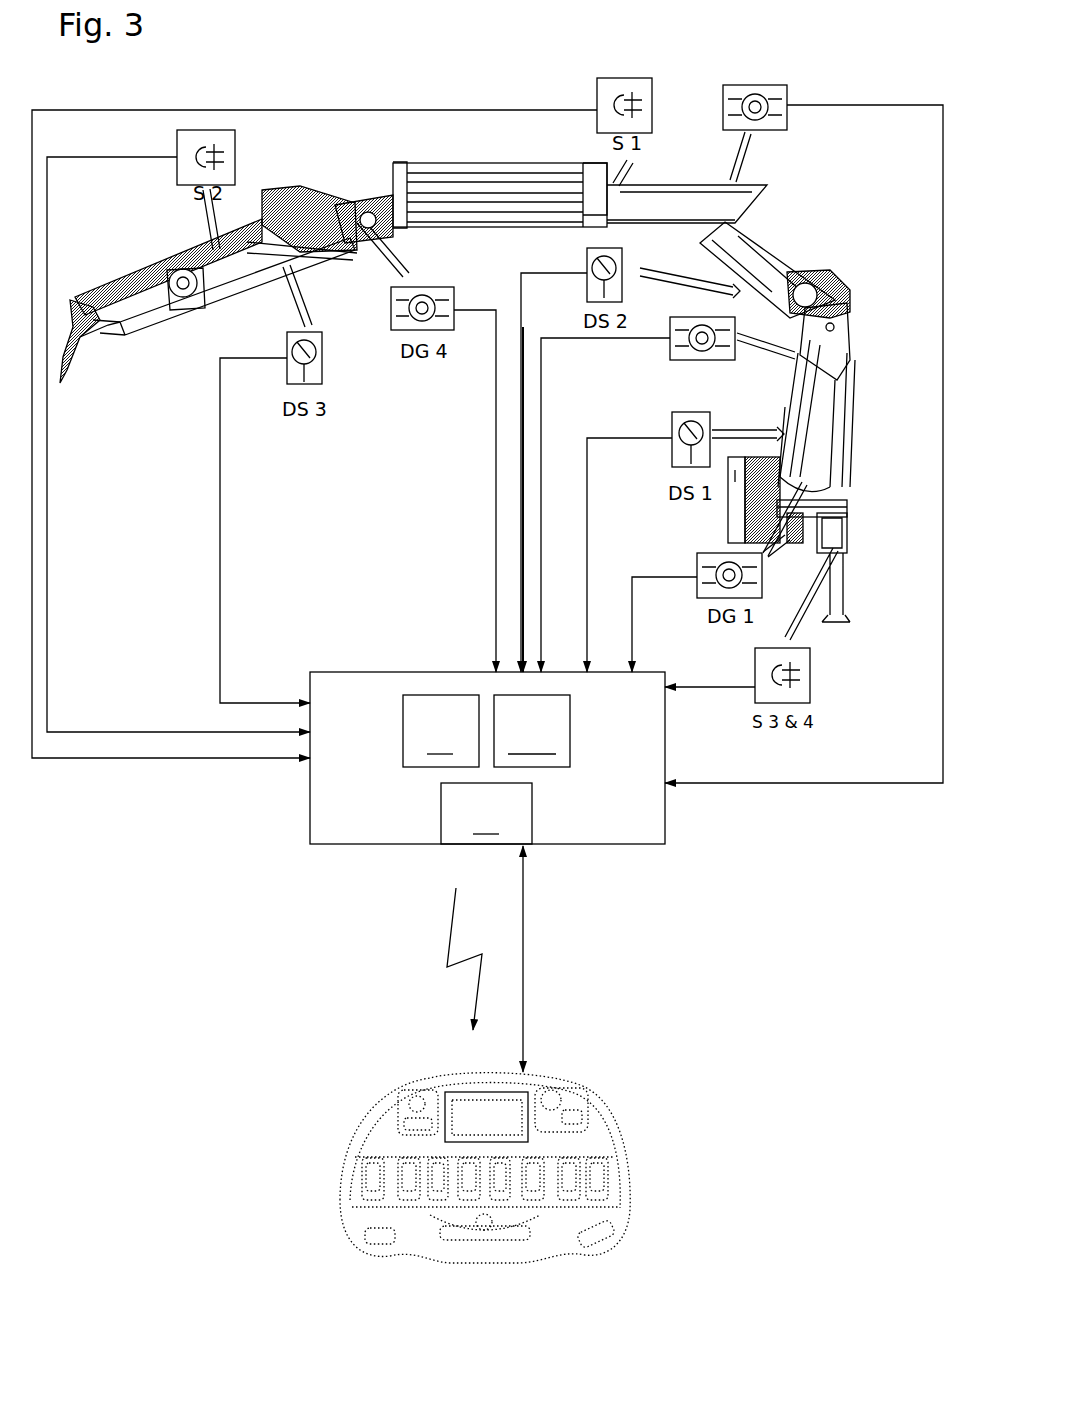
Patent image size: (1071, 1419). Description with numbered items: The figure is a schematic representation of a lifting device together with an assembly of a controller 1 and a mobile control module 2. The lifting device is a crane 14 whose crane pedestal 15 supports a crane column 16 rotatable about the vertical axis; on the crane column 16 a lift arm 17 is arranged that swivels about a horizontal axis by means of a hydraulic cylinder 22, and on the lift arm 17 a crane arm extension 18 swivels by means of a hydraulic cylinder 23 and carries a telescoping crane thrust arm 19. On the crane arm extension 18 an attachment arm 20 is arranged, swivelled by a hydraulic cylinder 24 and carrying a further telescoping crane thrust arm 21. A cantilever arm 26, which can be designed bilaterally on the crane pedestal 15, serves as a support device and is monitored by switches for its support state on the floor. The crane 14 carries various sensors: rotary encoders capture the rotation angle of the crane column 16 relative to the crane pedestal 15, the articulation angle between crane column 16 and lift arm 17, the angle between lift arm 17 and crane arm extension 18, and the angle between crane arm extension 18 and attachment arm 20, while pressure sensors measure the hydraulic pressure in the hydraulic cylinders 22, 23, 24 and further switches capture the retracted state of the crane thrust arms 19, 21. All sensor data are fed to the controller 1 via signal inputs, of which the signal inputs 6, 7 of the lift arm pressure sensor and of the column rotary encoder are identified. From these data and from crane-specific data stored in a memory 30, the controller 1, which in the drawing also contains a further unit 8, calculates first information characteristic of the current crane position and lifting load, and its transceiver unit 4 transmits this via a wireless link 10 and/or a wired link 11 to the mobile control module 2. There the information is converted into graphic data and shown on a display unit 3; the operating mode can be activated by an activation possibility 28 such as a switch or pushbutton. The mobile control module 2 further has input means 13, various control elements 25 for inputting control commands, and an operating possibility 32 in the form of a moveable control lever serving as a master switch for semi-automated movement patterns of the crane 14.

The controller 1 is at (406, 813).
The mobile control module 2 is at (467, 1170).
The display unit 3 is at (500, 1117).
The transceiver unit 4 is at (486, 813).
The signal input 6 is at (629, 555).
The signal input 7 is at (638, 494).
The memory unit 8 is at (441, 731).
The wireless link 10 is at (434, 959).
The wired link 11 is at (549, 959).
The input means 13 is at (400, 1125).
The crane 14 is at (858, 73).
The crane pedestal 15 is at (847, 507).
The crane column 16 is at (830, 407).
The lift arm 17 is at (765, 235).
The crane arm extension 18 is at (658, 176).
The crane thrust arm 19 is at (367, 203).
The attachment arm 20 is at (163, 250).
The crane thrust arm 21 is at (62, 373).
The hydraulic cylinder 22 is at (787, 413).
The hydraulic cylinder 23 is at (755, 277).
The hydraulic cylinder 24 is at (308, 258).
The control elements 25 is at (387, 1217).
The cantilever arm 26 is at (838, 590).
The activation possibility 28 is at (423, 1128).
The memory 30 is at (532, 731).
The operating possibility 32 is at (575, 1245).